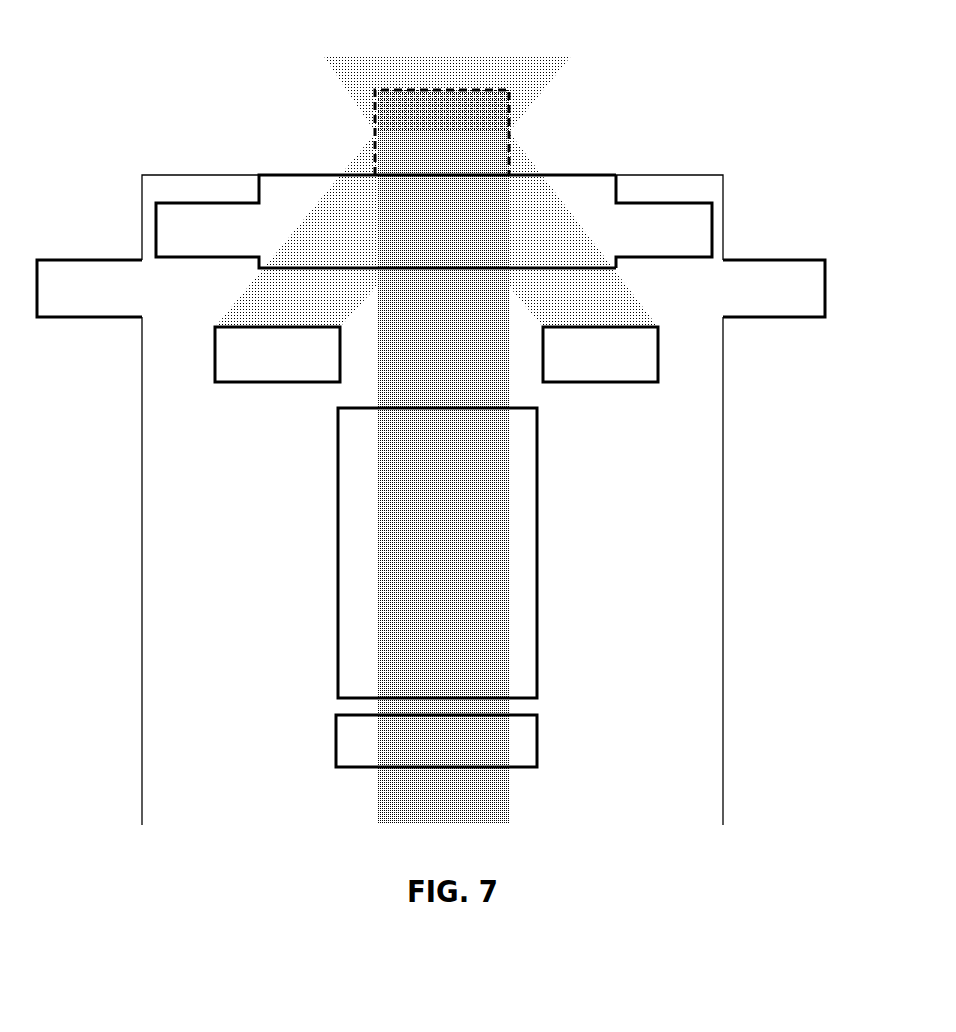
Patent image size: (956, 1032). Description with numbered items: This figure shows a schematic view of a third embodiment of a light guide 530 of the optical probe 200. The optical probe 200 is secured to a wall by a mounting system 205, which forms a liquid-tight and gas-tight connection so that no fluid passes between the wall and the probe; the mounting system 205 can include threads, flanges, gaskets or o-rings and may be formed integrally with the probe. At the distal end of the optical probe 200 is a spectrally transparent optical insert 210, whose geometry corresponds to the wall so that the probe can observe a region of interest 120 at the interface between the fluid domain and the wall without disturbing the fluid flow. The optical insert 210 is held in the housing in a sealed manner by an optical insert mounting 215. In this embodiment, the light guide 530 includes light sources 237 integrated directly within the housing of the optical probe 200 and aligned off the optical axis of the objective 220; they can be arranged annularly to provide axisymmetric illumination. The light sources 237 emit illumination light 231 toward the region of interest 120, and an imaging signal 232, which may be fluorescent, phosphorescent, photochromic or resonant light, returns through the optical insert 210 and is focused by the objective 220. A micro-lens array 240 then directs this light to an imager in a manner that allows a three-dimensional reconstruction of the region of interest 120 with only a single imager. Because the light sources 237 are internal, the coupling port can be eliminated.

The region of interest 120 is at (375, 90).
The optical probe 200 is at (203, 813).
The mounting system 205 is at (784, 259).
The optical insert 210 is at (258, 190).
The optical insert mounting 215 is at (686, 202).
The objective 220 is at (539, 515).
The illumination light 231 is at (313, 310).
The imaging signal 232 is at (467, 355).
The light sources 237 is at (298, 367).
The micro-lens array 240 is at (539, 737).
The light guide 530 is at (228, 398).